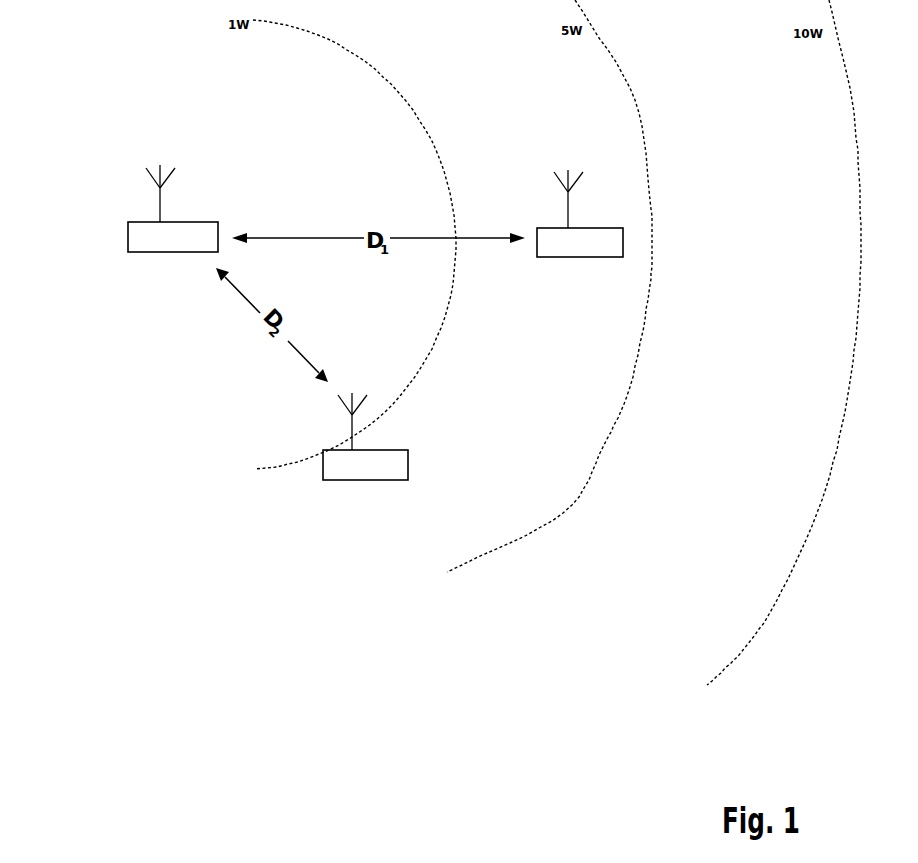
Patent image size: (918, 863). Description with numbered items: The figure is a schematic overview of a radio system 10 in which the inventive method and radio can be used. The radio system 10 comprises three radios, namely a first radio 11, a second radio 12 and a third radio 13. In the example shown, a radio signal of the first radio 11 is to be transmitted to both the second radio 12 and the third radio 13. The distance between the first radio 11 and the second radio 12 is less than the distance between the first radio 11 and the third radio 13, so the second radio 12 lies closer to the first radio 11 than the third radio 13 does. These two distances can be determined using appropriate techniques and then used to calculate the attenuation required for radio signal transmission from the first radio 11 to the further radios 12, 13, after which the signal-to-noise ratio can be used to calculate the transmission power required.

The radio system 10 is at (92, 552).
The first radio 11 is at (197, 221).
The second radio 12 is at (408, 482).
The third radio 13 is at (572, 258).